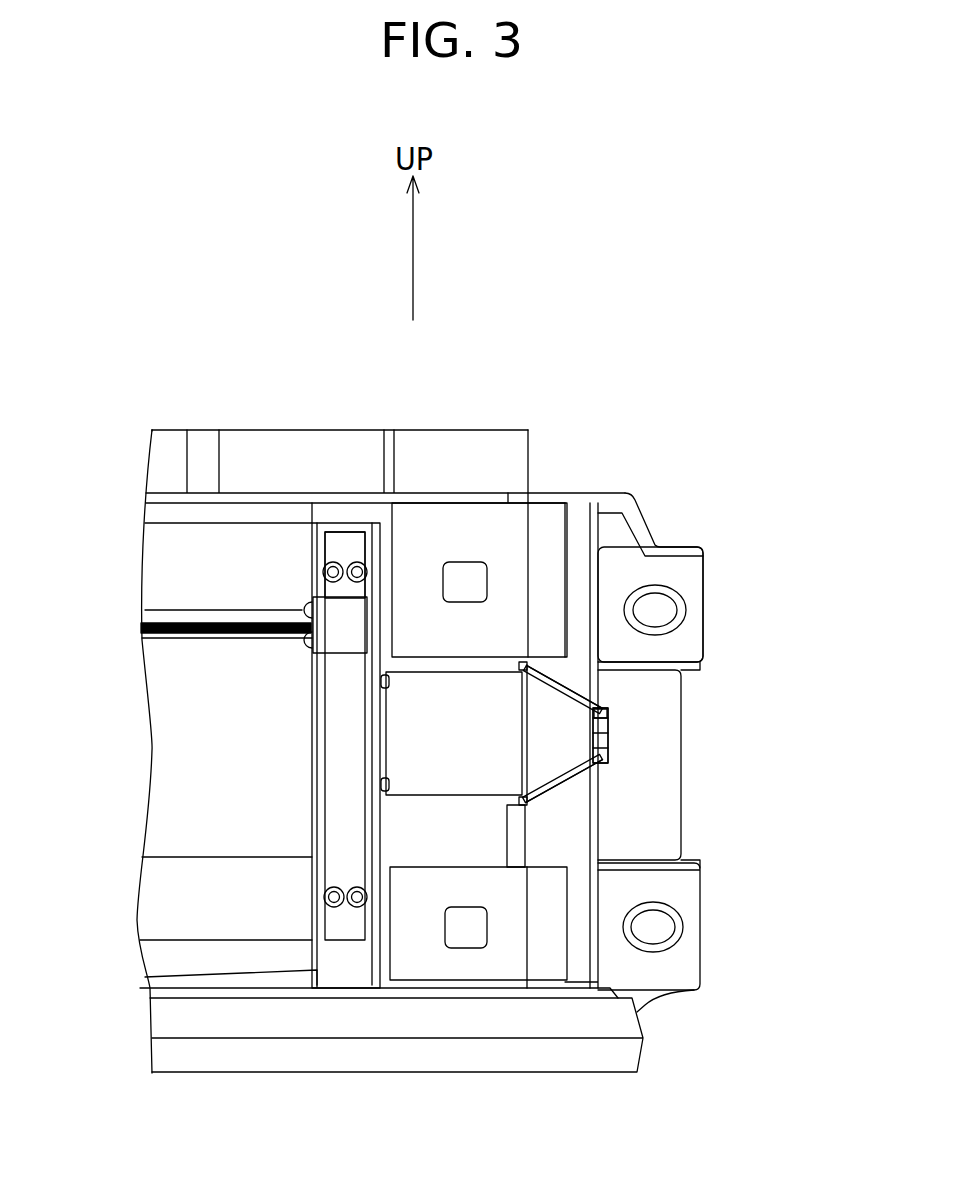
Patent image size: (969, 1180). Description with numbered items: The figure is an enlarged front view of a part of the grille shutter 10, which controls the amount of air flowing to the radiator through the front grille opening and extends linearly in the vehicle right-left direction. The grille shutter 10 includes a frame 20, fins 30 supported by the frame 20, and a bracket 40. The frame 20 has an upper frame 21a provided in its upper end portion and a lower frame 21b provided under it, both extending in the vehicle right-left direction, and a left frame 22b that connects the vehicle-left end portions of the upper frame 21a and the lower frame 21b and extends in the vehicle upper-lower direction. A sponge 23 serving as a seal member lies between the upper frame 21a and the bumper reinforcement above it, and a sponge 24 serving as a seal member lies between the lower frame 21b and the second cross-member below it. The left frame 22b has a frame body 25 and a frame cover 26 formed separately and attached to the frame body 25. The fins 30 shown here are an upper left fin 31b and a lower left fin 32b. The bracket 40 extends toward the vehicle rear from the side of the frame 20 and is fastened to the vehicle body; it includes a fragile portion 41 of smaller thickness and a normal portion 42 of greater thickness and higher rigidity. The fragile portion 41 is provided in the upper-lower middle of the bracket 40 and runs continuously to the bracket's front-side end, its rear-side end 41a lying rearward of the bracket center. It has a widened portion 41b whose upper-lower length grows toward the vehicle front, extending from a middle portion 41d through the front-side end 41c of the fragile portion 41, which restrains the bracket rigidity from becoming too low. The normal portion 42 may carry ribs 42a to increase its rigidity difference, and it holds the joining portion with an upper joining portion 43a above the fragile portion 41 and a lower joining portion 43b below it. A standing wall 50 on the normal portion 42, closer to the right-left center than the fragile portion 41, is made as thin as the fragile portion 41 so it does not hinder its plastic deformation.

The grille shutter 10 is at (143, 418).
The frame 20 is at (157, 955).
The upper frame 21a is at (163, 510).
The lower frame 21b is at (195, 960).
The left frame 22b is at (310, 725).
The sponge 23 is at (272, 462).
The sponge 24 is at (273, 1057).
The frame body 25 is at (343, 515).
The frame cover 26 is at (357, 548).
The fins 30 is at (218, 622).
The upper left fin 31b is at (187, 636).
The lower left fin 32b is at (212, 852).
The bracket 40 is at (565, 493).
The fragile portion 41 is at (593, 767).
The rear-side end 41a is at (600, 737).
The widened portion 41b is at (545, 757).
The front-side end 41c is at (517, 728).
The middle portion 41d is at (602, 713).
The normal portion 42 is at (580, 517).
The ribs 42a is at (662, 662).
The upper joining portion 43a is at (660, 605).
The lower joining portion 43b is at (672, 928).
The standing wall 50 is at (388, 730).